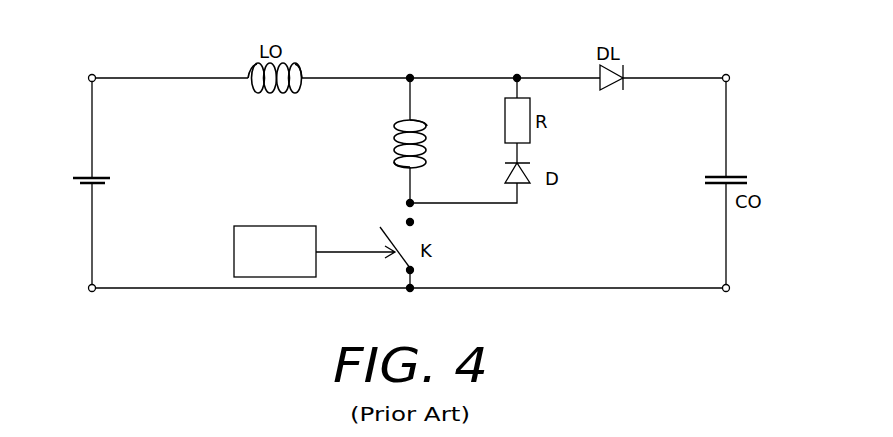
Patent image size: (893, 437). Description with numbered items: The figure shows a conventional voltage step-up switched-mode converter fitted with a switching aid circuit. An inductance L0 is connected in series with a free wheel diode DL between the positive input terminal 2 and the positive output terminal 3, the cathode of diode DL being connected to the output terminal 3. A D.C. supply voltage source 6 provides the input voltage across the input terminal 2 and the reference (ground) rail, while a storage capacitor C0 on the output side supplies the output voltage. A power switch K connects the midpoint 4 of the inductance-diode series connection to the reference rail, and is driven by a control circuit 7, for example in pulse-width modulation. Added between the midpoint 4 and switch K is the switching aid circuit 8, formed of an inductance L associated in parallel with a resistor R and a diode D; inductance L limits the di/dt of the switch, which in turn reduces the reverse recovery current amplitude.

The positive input terminal 2 is at (95, 75).
The positive output terminal 3 is at (723, 74).
The midpoint 4 is at (413, 75).
The D.C. supply voltage source 6 is at (100, 175).
The control circuit 7 is at (250, 226).
The switching aid circuit 8 is at (380, 170).